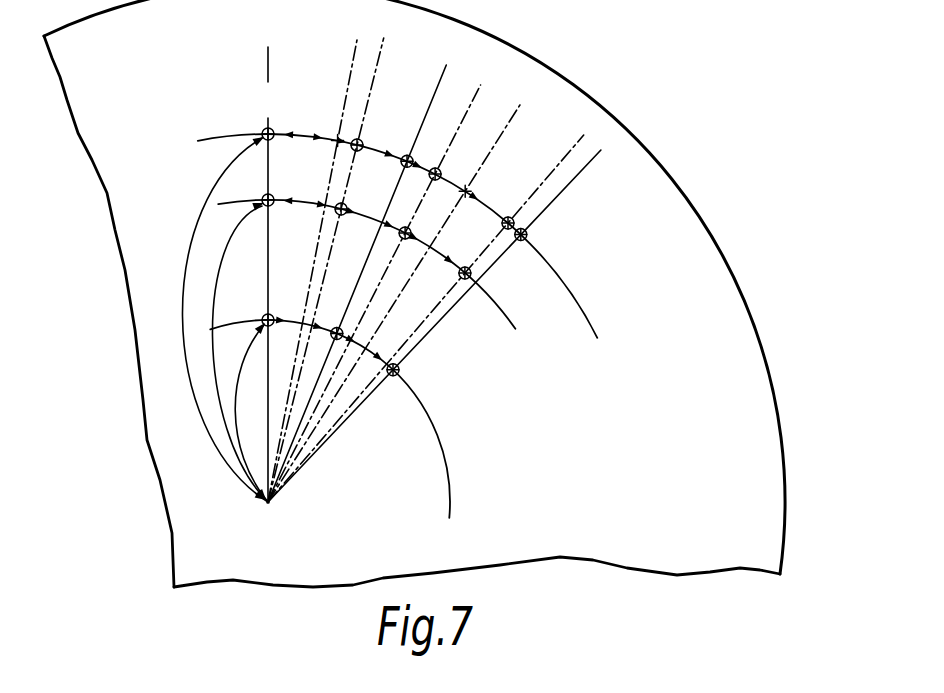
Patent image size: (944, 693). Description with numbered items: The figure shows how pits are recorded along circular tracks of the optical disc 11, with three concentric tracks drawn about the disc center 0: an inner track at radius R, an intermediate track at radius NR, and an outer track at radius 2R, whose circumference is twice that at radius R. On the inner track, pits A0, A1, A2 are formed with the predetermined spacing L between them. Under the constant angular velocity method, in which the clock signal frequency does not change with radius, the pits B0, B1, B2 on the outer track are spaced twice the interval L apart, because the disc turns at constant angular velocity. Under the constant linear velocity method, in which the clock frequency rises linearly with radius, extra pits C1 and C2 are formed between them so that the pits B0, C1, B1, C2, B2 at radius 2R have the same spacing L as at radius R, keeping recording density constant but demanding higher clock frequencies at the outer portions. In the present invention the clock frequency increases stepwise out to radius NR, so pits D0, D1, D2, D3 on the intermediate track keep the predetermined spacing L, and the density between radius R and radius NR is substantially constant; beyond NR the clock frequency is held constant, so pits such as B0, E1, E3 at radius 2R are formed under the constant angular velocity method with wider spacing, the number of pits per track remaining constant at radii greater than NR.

The optical disc 11 is at (759, 321).
The center of disc 0 is at (269, 522).
The radius 2R is at (220, 319).
The radius NR is at (232, 352).
The radius R is at (246, 412).
The predetermined spacing L is at (302, 208).
The pit A0 is at (253, 306).
The pit A1 is at (338, 314).
The pit A2 is at (400, 350).
The pit B0 is at (267, 115).
The pit B1 is at (418, 140).
The pit B2 is at (541, 222).
The pit C1 is at (340, 115).
The pit C2 is at (482, 174).
The pit D0 is at (255, 185).
The pit D1 is at (357, 198).
The pit D2 is at (419, 221).
The point D3 is at (476, 259).
The pit E1 is at (411, 137).
The point E3 is at (519, 202).